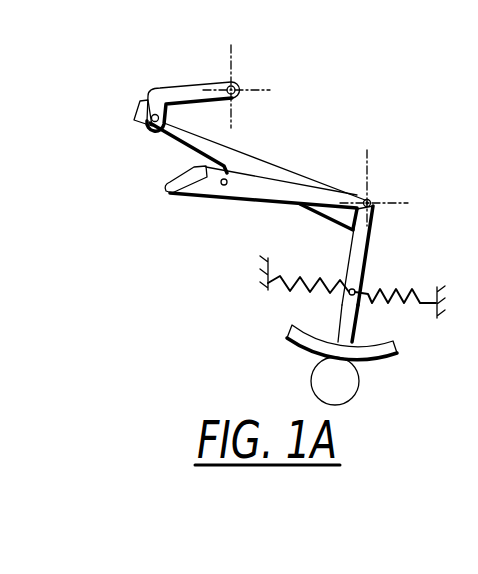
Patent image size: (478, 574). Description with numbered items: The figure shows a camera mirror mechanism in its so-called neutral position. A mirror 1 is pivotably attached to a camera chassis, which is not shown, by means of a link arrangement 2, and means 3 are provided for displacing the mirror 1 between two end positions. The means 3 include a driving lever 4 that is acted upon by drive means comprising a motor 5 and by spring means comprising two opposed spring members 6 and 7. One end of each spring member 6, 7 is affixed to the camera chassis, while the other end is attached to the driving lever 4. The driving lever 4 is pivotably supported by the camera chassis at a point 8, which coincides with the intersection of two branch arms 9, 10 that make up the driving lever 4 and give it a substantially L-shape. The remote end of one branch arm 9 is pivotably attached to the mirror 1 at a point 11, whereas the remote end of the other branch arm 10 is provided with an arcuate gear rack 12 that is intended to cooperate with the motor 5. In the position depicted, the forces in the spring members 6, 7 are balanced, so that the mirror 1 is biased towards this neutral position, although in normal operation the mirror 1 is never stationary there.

The mirror 1 is at (250, 152).
The link arrangement 2 is at (176, 92).
The means for displacing the mirror 3 is at (373, 267).
The driving lever 4 is at (348, 193).
The motor 5 is at (360, 391).
The spring member 6 is at (287, 290).
The spring member 7 is at (405, 284).
The pivot point 8 is at (375, 203).
The branch arm 9 is at (252, 185).
The branch arm 10 is at (347, 322).
The pivot point 11 is at (221, 183).
The arcuate gear rack 12 is at (292, 333).